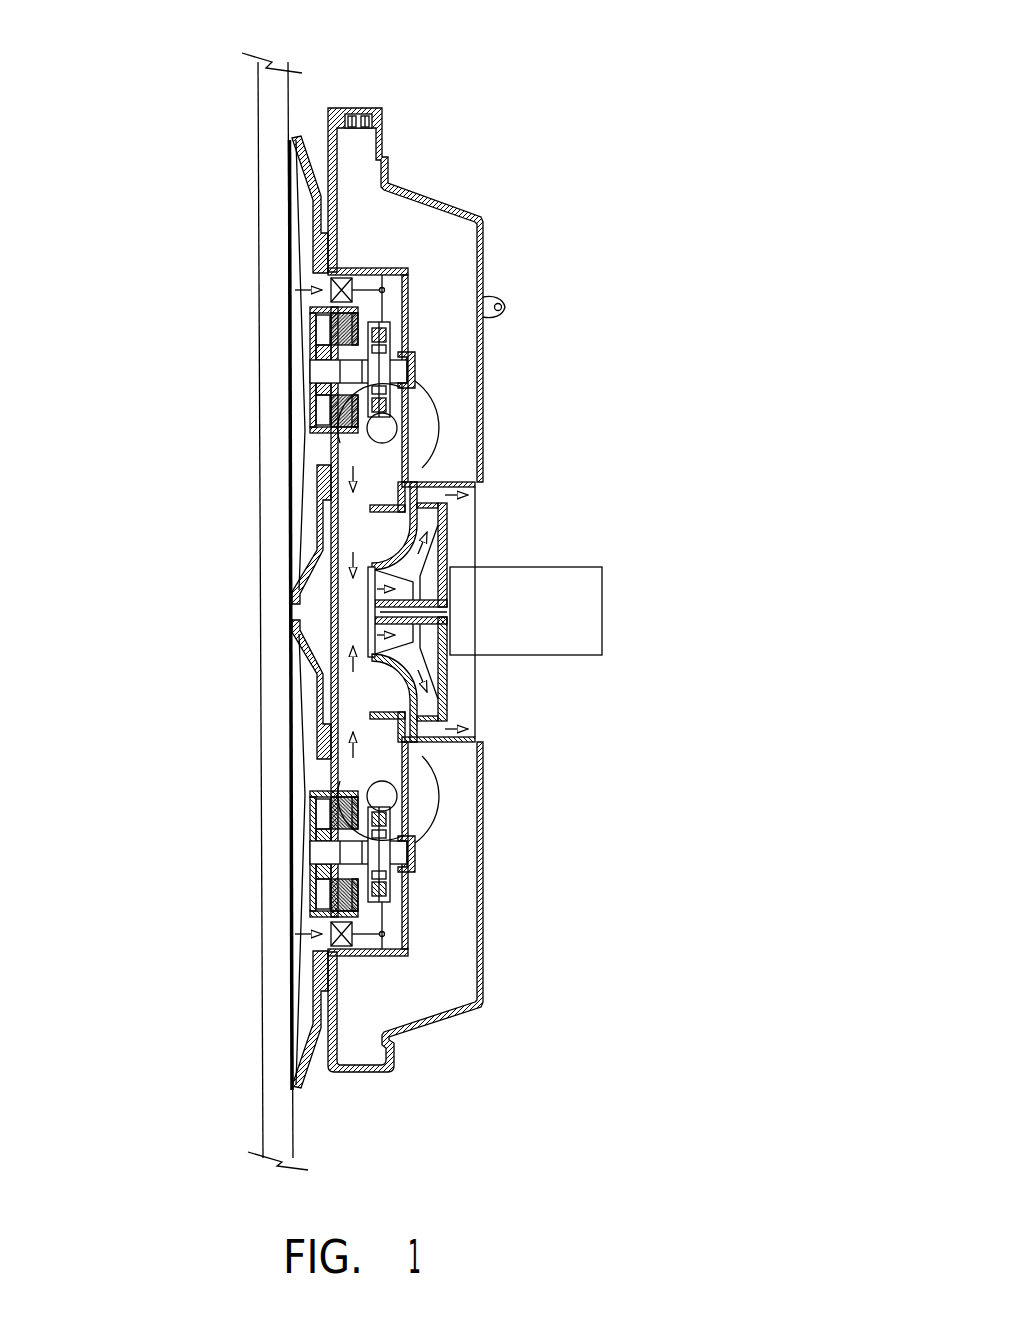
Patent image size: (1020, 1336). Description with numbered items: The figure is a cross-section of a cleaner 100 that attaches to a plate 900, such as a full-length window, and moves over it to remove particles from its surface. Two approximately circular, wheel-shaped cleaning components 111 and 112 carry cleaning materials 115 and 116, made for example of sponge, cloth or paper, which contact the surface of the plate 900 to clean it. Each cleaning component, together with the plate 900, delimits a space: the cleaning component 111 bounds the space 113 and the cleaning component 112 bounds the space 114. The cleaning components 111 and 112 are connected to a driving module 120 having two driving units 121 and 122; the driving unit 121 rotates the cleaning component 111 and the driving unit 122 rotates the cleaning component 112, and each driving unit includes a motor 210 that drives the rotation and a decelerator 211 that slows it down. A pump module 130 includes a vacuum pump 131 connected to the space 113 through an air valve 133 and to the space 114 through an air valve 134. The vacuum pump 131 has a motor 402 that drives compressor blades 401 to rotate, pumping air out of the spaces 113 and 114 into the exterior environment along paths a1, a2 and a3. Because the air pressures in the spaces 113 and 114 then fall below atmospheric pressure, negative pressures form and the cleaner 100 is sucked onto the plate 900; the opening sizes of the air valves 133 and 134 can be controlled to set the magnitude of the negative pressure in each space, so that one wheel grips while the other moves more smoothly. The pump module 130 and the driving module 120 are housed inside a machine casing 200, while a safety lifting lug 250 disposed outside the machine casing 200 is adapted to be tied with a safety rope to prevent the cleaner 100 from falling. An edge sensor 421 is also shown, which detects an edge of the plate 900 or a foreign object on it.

The cleaner 100 is at (672, 78).
The plate 900 is at (273, 1040).
The machine casing 200 is at (428, 183).
The edge sensor 421 is at (358, 107).
The safety lifting lug 250 is at (505, 307).
The cleaning material 115 is at (297, 148).
The cleaning component 111 is at (318, 198).
The space 114 is at (300, 845).
The space 113 is at (300, 355).
The cleaning component 112 is at (300, 685).
The cleaning material 116 is at (298, 603).
The air valve 133 is at (408, 272).
The air valve 134 is at (408, 952).
The driving module 120 is at (525, 612).
The driving unit 121 is at (605, 373).
The driving unit 122 is at (605, 771).
The motor 210 is at (440, 432).
The decelerator 211 is at (413, 387).
The pump module 130 is at (569, 612).
The vacuum pump 131 is at (569, 612).
The compressor blades 401 is at (468, 556).
The motor 402 is at (542, 576).
The path a1 is at (300, 288).
The path a2 is at (330, 568).
The path a3 is at (470, 497).